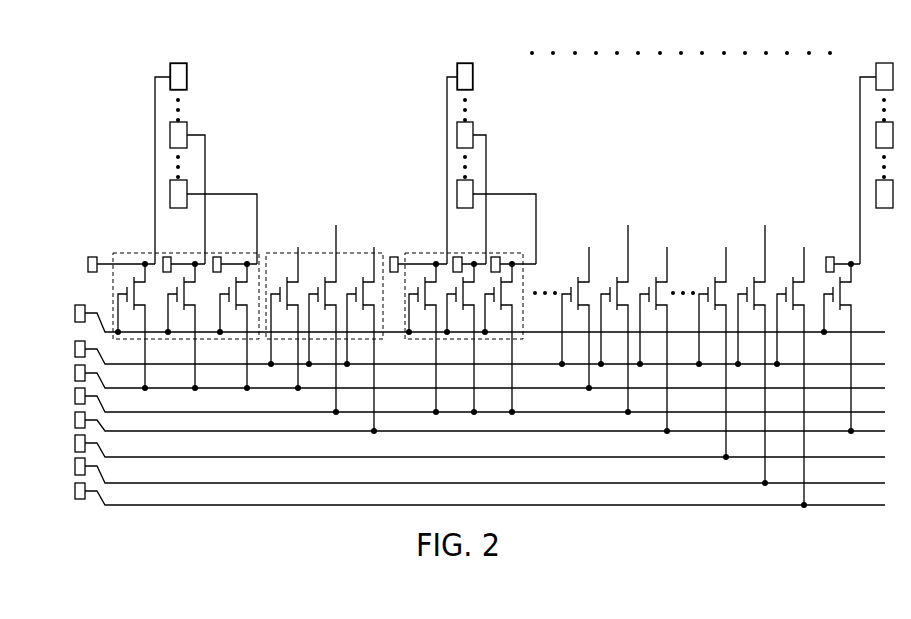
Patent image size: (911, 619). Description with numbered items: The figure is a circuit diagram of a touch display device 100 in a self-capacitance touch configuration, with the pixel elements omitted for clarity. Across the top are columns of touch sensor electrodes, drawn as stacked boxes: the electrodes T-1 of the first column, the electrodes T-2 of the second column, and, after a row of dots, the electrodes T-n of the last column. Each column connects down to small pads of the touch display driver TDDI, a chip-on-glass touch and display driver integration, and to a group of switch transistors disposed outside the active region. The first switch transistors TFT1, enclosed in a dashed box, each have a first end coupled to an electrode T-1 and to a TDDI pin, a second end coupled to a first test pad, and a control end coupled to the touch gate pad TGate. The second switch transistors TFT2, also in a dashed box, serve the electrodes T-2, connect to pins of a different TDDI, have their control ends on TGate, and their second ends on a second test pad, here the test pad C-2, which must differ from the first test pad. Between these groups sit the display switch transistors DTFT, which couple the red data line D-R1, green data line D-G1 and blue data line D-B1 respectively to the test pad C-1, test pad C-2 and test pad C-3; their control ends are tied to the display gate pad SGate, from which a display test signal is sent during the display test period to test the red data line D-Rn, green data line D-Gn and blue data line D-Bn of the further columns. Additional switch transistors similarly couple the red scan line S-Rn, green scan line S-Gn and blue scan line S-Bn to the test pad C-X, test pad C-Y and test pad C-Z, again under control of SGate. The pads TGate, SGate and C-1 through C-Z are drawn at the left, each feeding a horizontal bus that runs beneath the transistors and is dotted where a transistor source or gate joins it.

The touch display device 100 is at (49, 39).
The touch sensor electrode in the first column T-1 is at (206, 154).
The touch sensor electrode in the second column T-2 is at (491, 154).
The touch sensor electrode in the n-th column T-n is at (877, 154).
The touch display driver TDDI is at (93, 256).
The first switch transistor TFT1 is at (128, 253).
The second switch transistor TFT2 is at (423, 253).
The display switch transistor DTFT is at (266, 253).
The red data line D-R1 is at (291, 310).
The green data line D-G1 is at (329, 310).
The blue data line D-B1 is at (367, 331).
The red data line D-Rn is at (582, 310).
The green data line D-Gn is at (622, 310).
The blue data line D-Bn is at (661, 331).
The red scan line S-Rn is at (718, 344).
The green scan line S-Gn is at (758, 346).
The blue scan line S-Bn is at (796, 368).
The touch gate pad TGate is at (457, 318).
The display gate pad SGate is at (458, 352).
The test pad C-1 is at (467, 376).
The test pad C-2 is at (467, 400).
The test pad C-3 is at (467, 421).
The test pad C-X is at (467, 446).
The test pad C-Y is at (468, 470).
The test pad C-Z is at (467, 494).